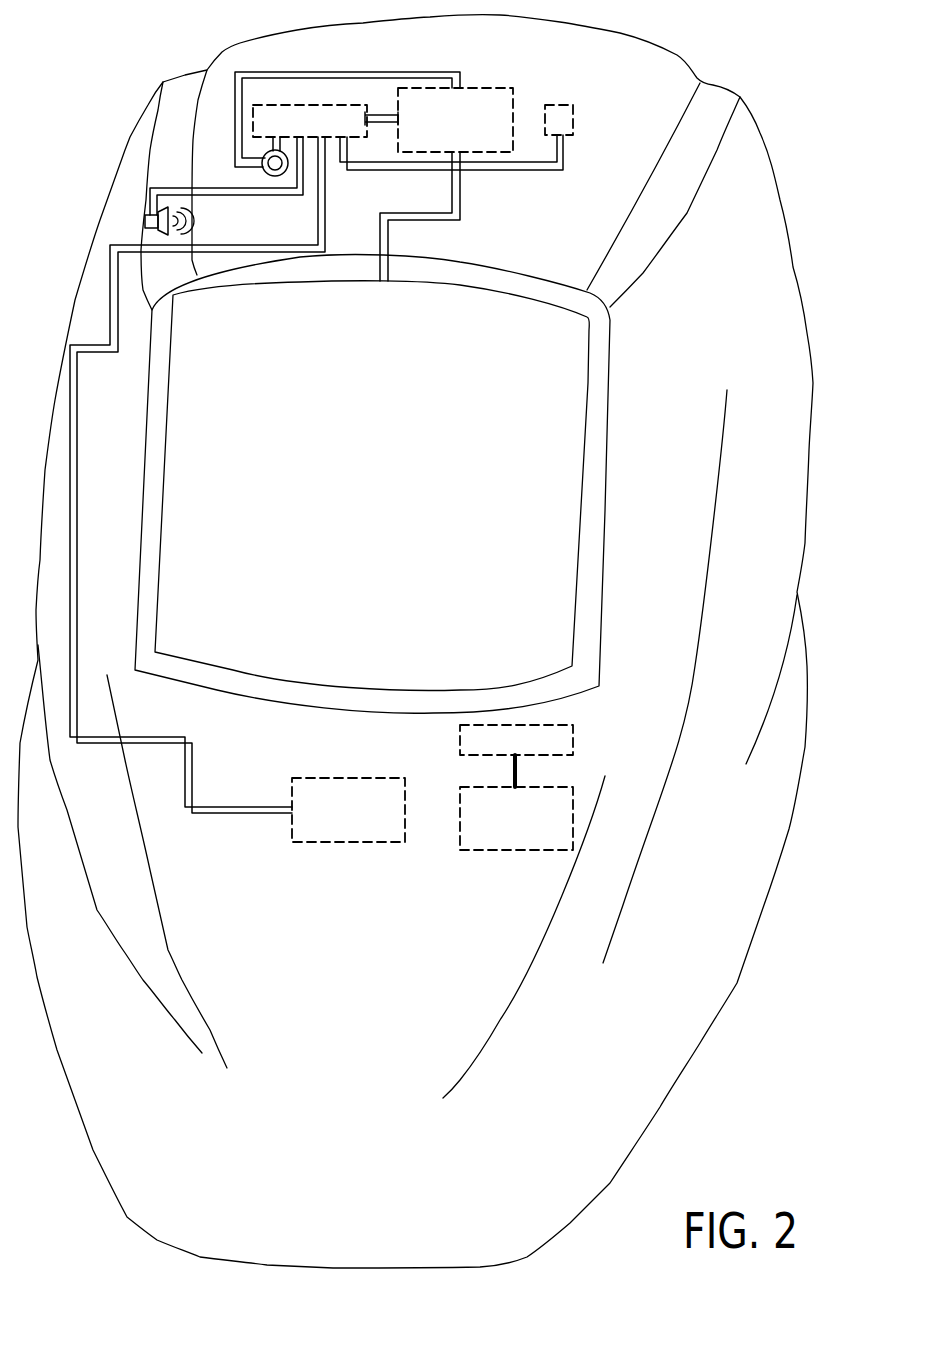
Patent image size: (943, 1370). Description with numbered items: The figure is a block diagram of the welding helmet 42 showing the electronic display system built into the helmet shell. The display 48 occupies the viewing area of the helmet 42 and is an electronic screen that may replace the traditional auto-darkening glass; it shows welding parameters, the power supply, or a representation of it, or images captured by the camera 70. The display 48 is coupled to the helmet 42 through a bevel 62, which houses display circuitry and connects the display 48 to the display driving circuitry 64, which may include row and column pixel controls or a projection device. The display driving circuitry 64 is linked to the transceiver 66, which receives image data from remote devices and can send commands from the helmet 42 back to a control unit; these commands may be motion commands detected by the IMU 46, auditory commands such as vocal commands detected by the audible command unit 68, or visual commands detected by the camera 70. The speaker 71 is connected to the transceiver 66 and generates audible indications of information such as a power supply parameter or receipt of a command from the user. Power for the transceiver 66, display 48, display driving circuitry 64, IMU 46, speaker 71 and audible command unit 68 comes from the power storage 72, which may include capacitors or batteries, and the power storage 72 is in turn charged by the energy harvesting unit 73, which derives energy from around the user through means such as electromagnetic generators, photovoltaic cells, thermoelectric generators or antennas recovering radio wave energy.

The welding helmet 42 is at (772, 884).
The IMU 46 is at (561, 105).
The display 48 is at (572, 570).
The bevel 62 is at (605, 511).
The display driving circuitry 64 is at (487, 87).
The transceiver 66 is at (313, 104).
The audible command unit 68 is at (346, 778).
The camera 70 is at (263, 157).
The speaker 71 is at (145, 220).
The power storage 72 is at (576, 733).
The energy harvesting unit 73 is at (512, 850).